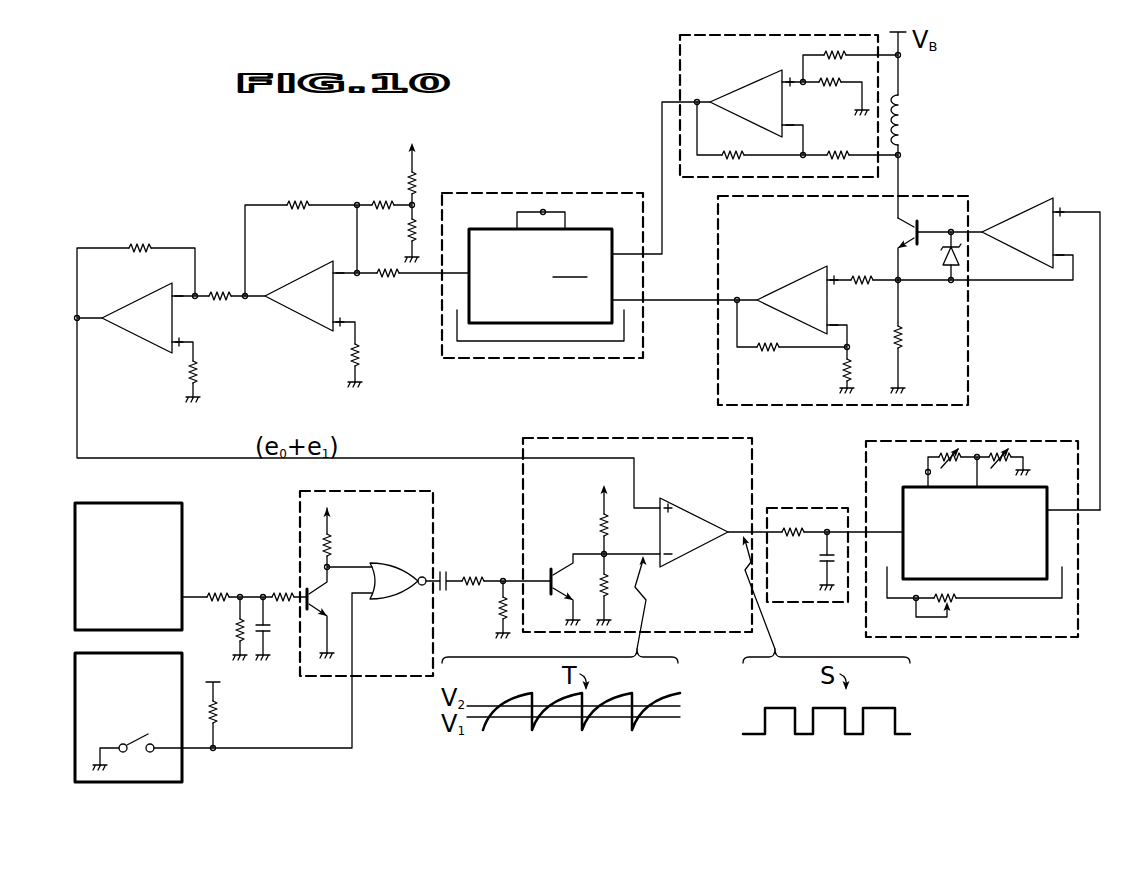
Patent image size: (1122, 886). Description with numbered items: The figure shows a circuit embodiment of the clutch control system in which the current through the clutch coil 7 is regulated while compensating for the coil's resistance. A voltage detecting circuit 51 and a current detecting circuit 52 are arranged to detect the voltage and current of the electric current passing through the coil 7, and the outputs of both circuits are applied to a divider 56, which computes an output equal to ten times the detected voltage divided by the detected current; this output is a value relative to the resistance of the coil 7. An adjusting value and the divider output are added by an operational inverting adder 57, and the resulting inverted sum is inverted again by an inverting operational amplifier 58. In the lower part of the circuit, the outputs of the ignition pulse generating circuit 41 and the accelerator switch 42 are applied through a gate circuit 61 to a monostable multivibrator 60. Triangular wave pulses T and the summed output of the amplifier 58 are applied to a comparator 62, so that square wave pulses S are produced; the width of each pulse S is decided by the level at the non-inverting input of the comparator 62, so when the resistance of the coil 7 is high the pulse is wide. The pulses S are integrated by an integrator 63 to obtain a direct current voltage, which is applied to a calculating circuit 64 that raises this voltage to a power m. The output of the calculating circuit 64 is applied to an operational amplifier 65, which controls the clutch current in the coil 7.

The coil 7 is at (905, 118).
The ignition pulse generating circuit 41 is at (182, 526).
The accelerator switch 42 is at (182, 676).
The voltage detecting circuit 51 is at (680, 63).
The current detecting circuit 52 is at (960, 196).
The divider 56 is at (530, 193).
The operational inverting adder 57 is at (301, 278).
The inverting operational amplifier 58 is at (132, 303).
The monostable multivibrator 60 is at (602, 436).
The gate circuit 61 is at (433, 524).
The comparator 62 is at (698, 516).
The integrator 63 is at (809, 508).
The calculating circuit 64 is at (1062, 440).
The operational amplifier 65 is at (1028, 210).